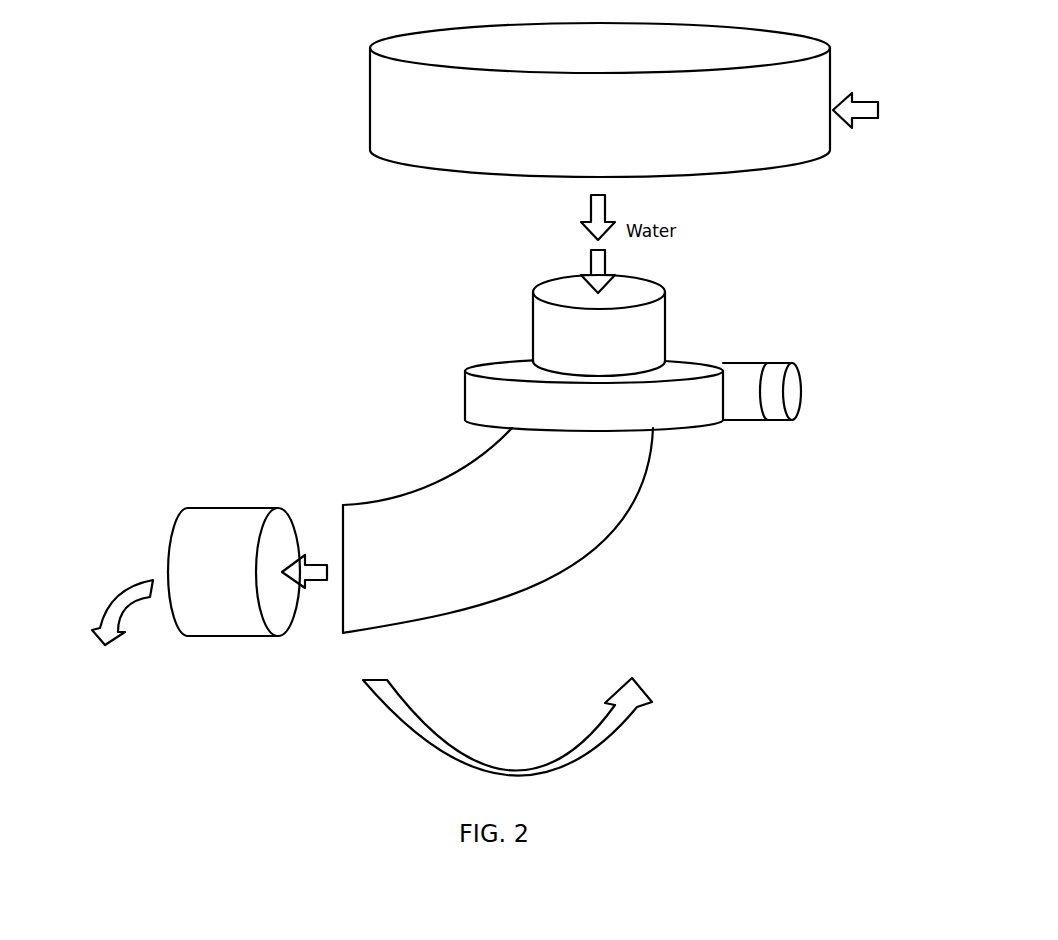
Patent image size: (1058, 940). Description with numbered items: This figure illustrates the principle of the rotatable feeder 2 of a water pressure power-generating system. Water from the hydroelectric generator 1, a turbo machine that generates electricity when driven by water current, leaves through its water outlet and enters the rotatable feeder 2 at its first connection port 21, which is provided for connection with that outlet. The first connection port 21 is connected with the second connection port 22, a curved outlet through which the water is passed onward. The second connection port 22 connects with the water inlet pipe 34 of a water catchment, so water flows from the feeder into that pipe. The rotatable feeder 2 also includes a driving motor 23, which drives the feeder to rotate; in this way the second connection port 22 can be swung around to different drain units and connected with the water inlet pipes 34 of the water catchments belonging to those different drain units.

The hydroelectric generator 1 is at (338, 88).
The rotatable feeder 2 is at (553, 438).
The first connection port 21 is at (513, 280).
The second connection port 22 is at (342, 483).
The driving motor 23 is at (783, 355).
The water inlet pipe 34 is at (223, 618).